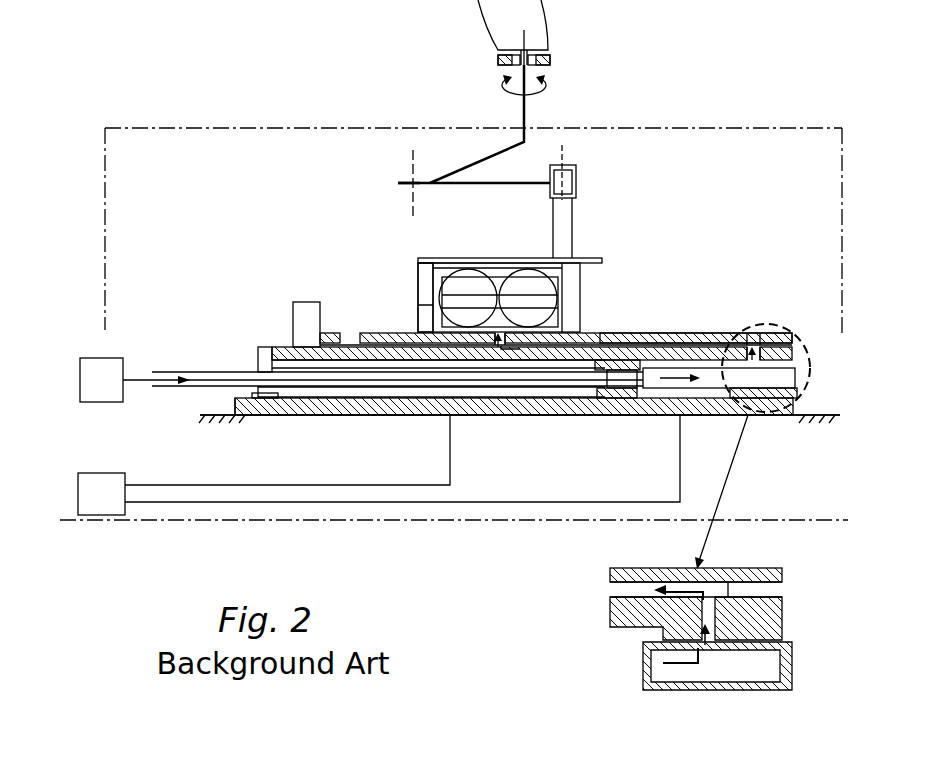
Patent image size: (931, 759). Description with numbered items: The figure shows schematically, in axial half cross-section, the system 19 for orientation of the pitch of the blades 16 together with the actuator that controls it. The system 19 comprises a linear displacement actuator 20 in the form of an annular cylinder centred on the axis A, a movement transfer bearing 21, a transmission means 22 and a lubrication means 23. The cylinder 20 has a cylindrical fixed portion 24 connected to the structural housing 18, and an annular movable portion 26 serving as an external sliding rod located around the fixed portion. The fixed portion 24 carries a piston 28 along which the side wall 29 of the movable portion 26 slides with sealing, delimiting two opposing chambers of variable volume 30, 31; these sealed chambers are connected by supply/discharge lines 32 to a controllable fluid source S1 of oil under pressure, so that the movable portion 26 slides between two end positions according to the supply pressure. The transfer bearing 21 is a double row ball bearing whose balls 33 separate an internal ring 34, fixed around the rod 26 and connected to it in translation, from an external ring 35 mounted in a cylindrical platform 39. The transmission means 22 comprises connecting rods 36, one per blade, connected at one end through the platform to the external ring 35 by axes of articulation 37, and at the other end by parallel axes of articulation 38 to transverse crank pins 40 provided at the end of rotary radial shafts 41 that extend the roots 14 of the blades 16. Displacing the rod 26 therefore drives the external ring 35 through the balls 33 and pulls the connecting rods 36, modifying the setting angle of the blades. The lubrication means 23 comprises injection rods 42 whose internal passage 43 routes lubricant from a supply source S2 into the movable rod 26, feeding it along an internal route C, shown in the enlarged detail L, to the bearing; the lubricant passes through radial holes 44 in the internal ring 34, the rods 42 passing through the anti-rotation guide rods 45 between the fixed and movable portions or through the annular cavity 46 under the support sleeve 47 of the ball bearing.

The blade root 14 is at (498, 52).
The blade 16 is at (530, 22).
The blade orientation system 19 is at (742, 127).
The linear displacement actuator 20 is at (256, 338).
The movement transfer bearing 21 is at (414, 272).
The transmission means 22 is at (433, 148).
The lubrication means 23 is at (173, 348).
The cylindrical fixed portion 24 is at (384, 424).
The structural housing 18 is at (213, 418).
The annular movable portion 26 is at (356, 340).
The piston 28 is at (620, 367).
The side wall 29 is at (304, 301).
The chamber of variable volume 30 is at (497, 393).
The chamber of variable volume 31 is at (710, 396).
The supply/discharge lines 32 is at (208, 487).
The double row ball bearing 33 is at (516, 286).
The internal ring 34 is at (436, 328).
The external ring 35 is at (446, 258).
The connecting rod 36 is at (534, 184).
The axis of articulation 37 is at (577, 172).
The axis of articulation 38 is at (413, 163).
The cylindrical platform 39 is at (588, 259).
The crank pin 40 is at (487, 153).
The rotary radial shaft 41 is at (534, 90).
The injection rod 42 is at (203, 372).
The internal passage 43 is at (213, 381).
The radial hole 44 is at (503, 340).
The anti-rotation guide rod 45 is at (327, 398).
The annular cavity 46 is at (717, 333).
The support sleeve 47 is at (668, 333).
The controllable fluid supply source S1 is at (101, 494).
The lubricant supply source S2 is at (101, 380).
The internal route C is at (755, 373).
The enlarged detail L is at (723, 490).
The axis A is at (840, 520).